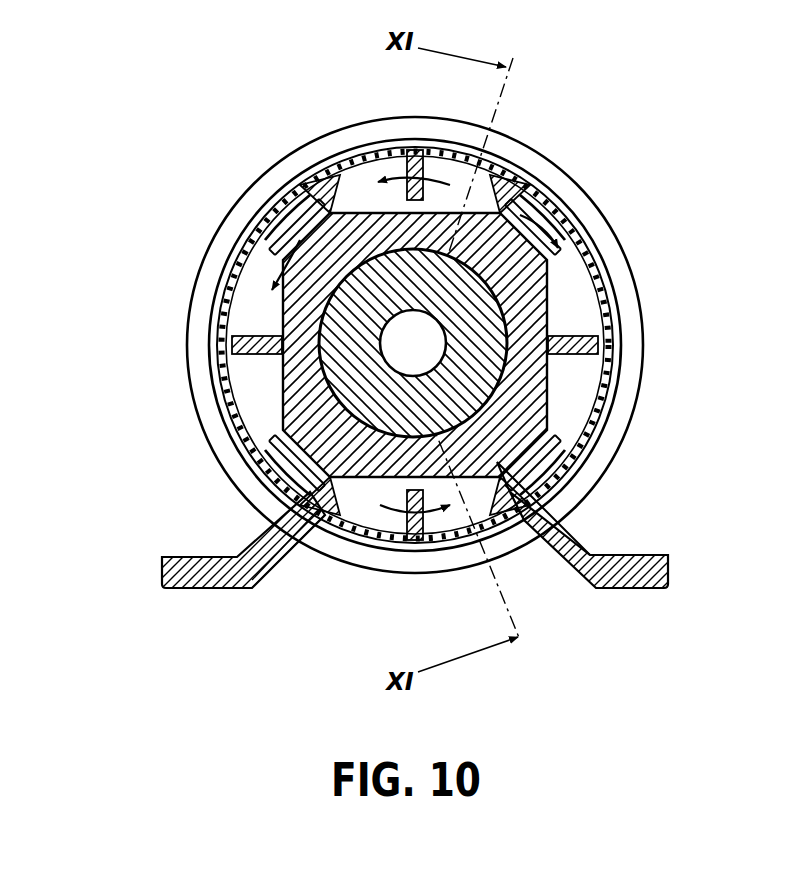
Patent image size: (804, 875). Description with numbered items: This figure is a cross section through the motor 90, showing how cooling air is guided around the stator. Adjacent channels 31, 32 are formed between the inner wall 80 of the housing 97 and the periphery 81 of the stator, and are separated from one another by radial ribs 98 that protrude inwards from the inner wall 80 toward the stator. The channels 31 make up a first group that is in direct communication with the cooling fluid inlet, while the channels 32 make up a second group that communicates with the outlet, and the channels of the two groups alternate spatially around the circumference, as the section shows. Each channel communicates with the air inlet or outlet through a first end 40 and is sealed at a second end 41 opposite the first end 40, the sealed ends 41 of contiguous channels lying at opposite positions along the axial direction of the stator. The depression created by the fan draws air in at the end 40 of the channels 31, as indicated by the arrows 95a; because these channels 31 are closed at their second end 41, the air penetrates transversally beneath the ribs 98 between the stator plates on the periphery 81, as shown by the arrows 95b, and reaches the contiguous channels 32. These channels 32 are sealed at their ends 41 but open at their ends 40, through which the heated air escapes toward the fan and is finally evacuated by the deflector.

The motor 90 is at (176, 368).
The arrows 95a is at (250, 235).
The arrows 95b is at (582, 218).
The housing 97 is at (608, 460).
The radial ribs 98 is at (395, 175).
The periphery of the stator 81 is at (572, 302).
The first end 40 is at (350, 168).
The second end 41 is at (502, 172).
The channels 31 is at (536, 205).
The channels 32 is at (338, 178).
The inner wall 80 is at (430, 185).